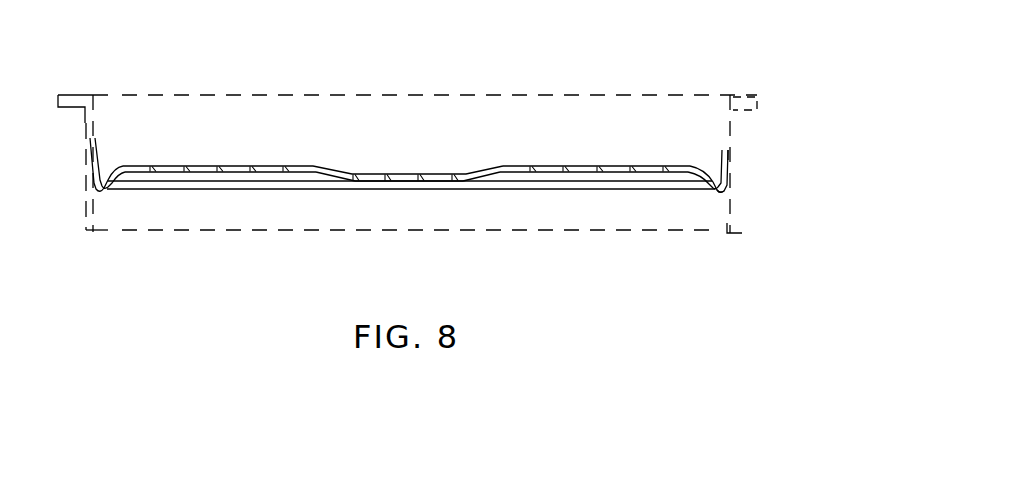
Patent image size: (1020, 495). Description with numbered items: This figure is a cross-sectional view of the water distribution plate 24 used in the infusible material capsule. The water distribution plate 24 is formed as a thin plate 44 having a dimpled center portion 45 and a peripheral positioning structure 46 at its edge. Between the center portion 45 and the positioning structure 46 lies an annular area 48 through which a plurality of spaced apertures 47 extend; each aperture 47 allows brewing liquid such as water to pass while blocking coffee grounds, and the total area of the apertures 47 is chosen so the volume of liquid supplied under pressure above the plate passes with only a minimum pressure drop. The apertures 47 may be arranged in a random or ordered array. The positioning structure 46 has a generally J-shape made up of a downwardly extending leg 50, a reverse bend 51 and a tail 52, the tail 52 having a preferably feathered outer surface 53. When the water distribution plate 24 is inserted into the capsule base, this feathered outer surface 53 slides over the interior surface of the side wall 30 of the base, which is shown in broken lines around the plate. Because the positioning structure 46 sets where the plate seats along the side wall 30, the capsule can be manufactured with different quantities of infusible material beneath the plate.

The water distribution plate 24 is at (604, 76).
The side wall 30 is at (747, 234).
The thin plate 44 is at (232, 172).
The dimpled center portion 45 is at (435, 183).
The positioning structure 46 is at (748, 126).
The apertures 47 is at (185, 170).
The annular area 48 is at (313, 172).
The downwardly extending leg 50 is at (572, 176).
The reverse bend 51 is at (728, 197).
The tail 52 is at (723, 152).
The feathered outer surface 53 is at (731, 156).